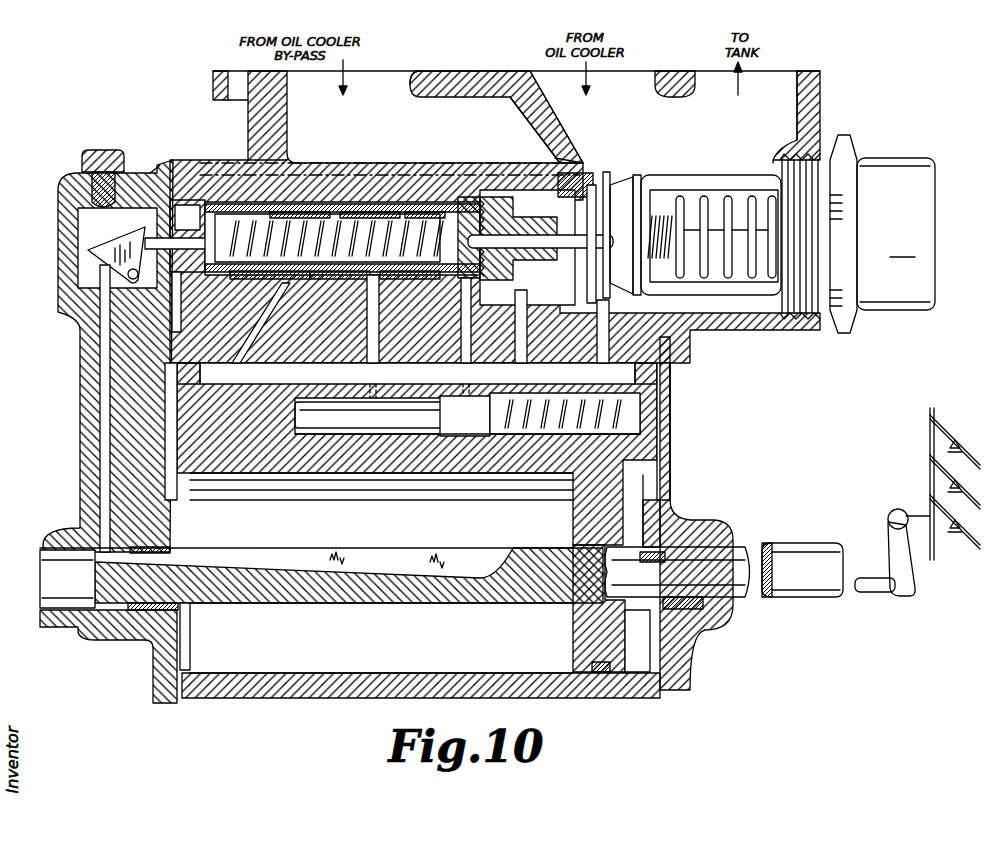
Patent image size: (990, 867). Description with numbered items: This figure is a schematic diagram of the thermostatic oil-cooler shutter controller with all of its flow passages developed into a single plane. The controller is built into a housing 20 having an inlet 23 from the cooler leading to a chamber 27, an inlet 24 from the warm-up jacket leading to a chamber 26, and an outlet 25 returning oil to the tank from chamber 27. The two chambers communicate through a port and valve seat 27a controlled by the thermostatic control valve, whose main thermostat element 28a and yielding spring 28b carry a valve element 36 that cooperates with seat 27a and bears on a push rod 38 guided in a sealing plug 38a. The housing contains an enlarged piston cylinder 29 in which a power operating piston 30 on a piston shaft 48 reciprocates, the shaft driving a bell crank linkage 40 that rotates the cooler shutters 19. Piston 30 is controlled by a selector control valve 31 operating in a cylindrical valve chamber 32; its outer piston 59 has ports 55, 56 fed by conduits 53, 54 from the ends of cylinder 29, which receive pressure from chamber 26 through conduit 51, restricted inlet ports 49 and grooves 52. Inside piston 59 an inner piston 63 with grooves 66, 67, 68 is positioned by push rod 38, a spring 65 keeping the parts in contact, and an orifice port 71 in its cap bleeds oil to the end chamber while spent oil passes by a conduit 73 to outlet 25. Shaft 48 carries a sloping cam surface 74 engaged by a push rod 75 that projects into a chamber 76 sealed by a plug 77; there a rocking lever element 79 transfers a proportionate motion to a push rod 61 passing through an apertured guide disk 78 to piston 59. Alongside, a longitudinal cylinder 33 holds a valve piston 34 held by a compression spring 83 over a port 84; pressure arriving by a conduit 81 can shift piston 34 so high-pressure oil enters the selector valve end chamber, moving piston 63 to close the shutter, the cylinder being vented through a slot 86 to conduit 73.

The cooler shutters 19 is at (928, 433).
The housing 20 is at (465, 76).
The inlet 23 is at (645, 80).
The inlet 24 is at (396, 82).
The outlet 25 is at (790, 72).
The chamber 26 is at (525, 130).
The chamber 27 is at (735, 326).
The port and valve seat 27a is at (594, 187).
The main thermostat element 28a is at (725, 205).
The spring 28b is at (656, 208).
The piston cylinder 29 is at (310, 636).
The power operating piston 30 is at (575, 631).
The selector control valve 31 is at (219, 200).
The cylindrical valve chamber 32 is at (226, 280).
The longitudinal cylinder 33 is at (330, 424).
The valve piston 34 is at (456, 424).
The valve element 36 is at (618, 190).
The push rod 38 is at (560, 250).
The plug 38a is at (508, 220).
The bell crank linkage 40 is at (887, 536).
The piston shaft 48 is at (794, 552).
The restricted inlet ports 49 is at (203, 378).
The conduit 51 is at (530, 330).
The grooves 52 is at (172, 420).
The conduit 53 is at (265, 328).
The conduit 54 is at (372, 334).
The port 55 is at (318, 272).
The port 56 is at (392, 272).
The piston 59 is at (247, 279).
The push rod 61 is at (176, 236).
The inner piston 63 is at (400, 212).
The spring 65 is at (250, 224).
The groove 66 is at (321, 212).
The groove 67 is at (361, 212).
The groove 68 is at (436, 212).
The orifice port 71 is at (468, 214).
The fluid conduit 73 is at (247, 163).
The sloping cam surface 74 is at (372, 567).
The push rod 75 is at (100, 367).
The chamber 76 is at (58, 197).
The plug 77 is at (106, 152).
The apertured guide disk 78 is at (167, 167).
The rocking lever element 79 is at (93, 257).
The conduit 81 is at (300, 400).
The compression spring 83 is at (648, 410).
The port 84 is at (468, 324).
The slot 86 is at (604, 333).